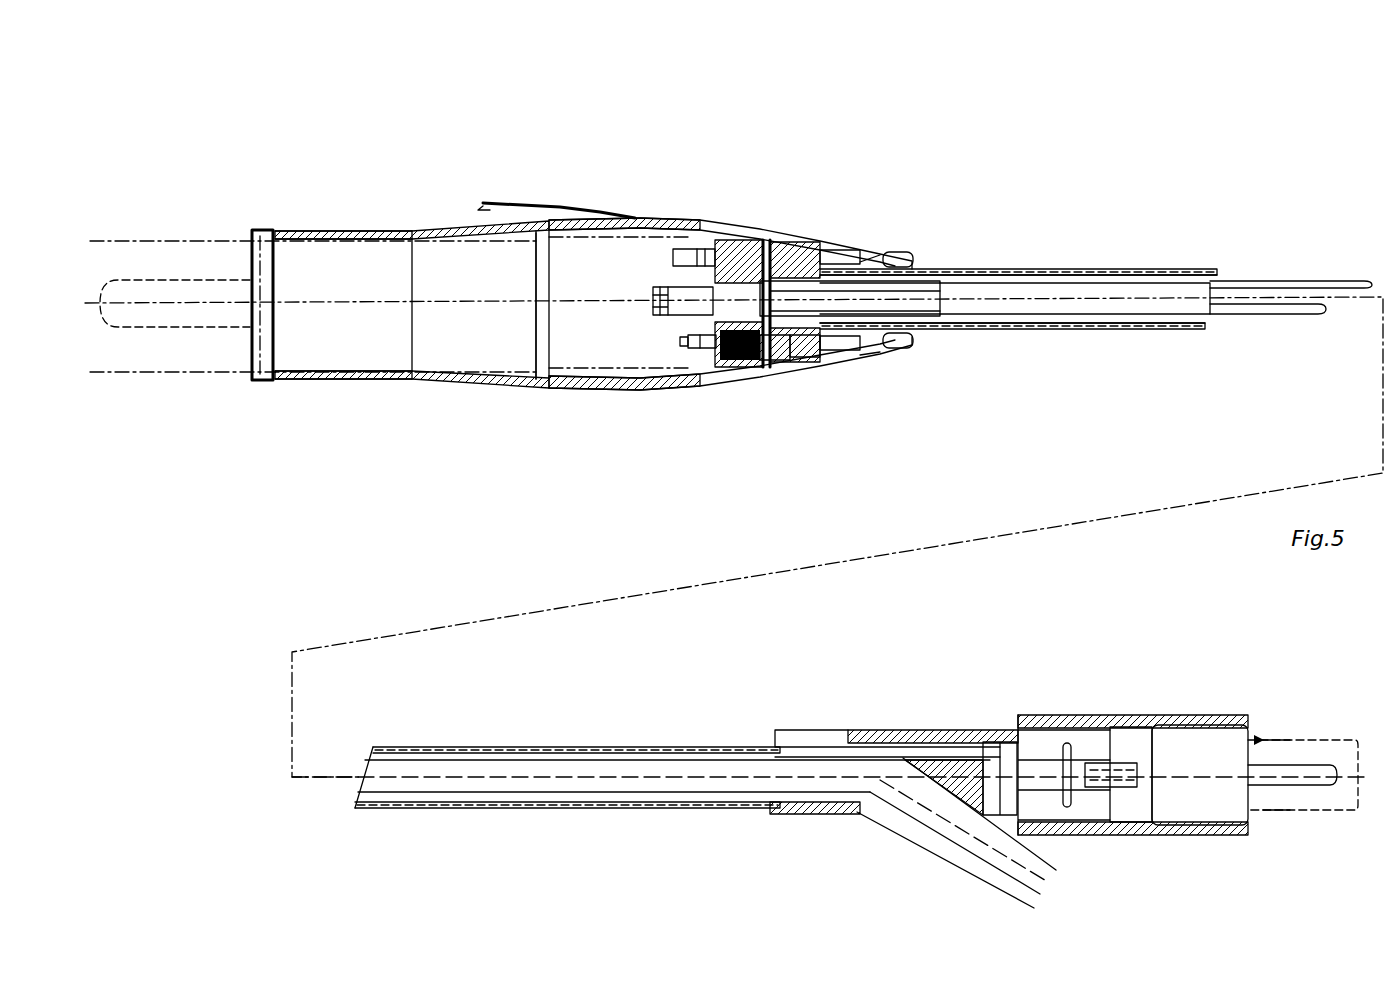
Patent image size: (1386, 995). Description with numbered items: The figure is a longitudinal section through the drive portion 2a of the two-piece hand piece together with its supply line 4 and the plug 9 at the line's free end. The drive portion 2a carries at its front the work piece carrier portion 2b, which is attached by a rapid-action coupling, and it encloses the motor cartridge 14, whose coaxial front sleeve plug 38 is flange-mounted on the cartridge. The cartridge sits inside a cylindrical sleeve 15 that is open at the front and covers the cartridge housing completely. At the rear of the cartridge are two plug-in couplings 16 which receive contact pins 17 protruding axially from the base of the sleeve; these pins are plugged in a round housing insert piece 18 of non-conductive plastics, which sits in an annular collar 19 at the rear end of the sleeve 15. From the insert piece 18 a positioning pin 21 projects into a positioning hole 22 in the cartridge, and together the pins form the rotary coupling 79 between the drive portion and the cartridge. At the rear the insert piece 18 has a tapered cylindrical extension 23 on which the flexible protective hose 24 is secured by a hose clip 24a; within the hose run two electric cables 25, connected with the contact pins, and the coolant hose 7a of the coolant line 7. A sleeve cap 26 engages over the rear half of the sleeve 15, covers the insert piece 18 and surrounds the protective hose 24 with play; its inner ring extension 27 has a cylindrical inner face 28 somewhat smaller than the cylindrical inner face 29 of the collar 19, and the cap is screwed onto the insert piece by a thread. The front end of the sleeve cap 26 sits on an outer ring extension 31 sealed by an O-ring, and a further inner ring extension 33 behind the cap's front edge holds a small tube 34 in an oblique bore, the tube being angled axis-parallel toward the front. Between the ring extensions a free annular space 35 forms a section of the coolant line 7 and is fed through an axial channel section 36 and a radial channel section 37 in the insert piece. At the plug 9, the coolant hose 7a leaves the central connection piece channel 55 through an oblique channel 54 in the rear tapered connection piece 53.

The drive portion 2a is at (428, 216).
The work piece carrier portion 2b is at (178, 230).
The front sleeve plug 38 is at (132, 290).
The motor cartridge 14 is at (310, 272).
The sleeve 15 is at (340, 228).
The outer ring extension 31 is at (549, 230).
The small tube 34 is at (499, 203).
The inner ring extension 33 is at (608, 217).
The annular space 35 is at (625, 215).
The positioning hole 22 is at (693, 250).
The positioning pin 21 is at (703, 255).
The rotary coupling 79 is at (697, 248).
The annular collar 19 is at (745, 243).
The channel section 37 is at (765, 243).
The housing insert piece 18 is at (800, 255).
The channel section 36 is at (823, 256).
The tapered cylindrical extension 23 is at (847, 258).
The hose clip 24a is at (872, 262).
The protective hose 24 is at (1074, 269).
The supply line 4 is at (1093, 333).
The coolant line 7 is at (782, 528).
The coolant hose 7a is at (1157, 290).
The electric cables 25 is at (1295, 305).
The plug-in couplings 16 is at (686, 352).
The contact pins 17 is at (697, 349).
The cylindrical inner face 29 is at (738, 361).
The inner ring extension 27 is at (777, 363).
The cylindrical inner face 28 is at (800, 358).
The sleeve cap 26 is at (862, 356).
The plug 9 is at (1077, 705).
The central connection piece channel 55 is at (890, 750).
The connection piece 53 is at (935, 735).
The oblique channel 54 is at (945, 795).